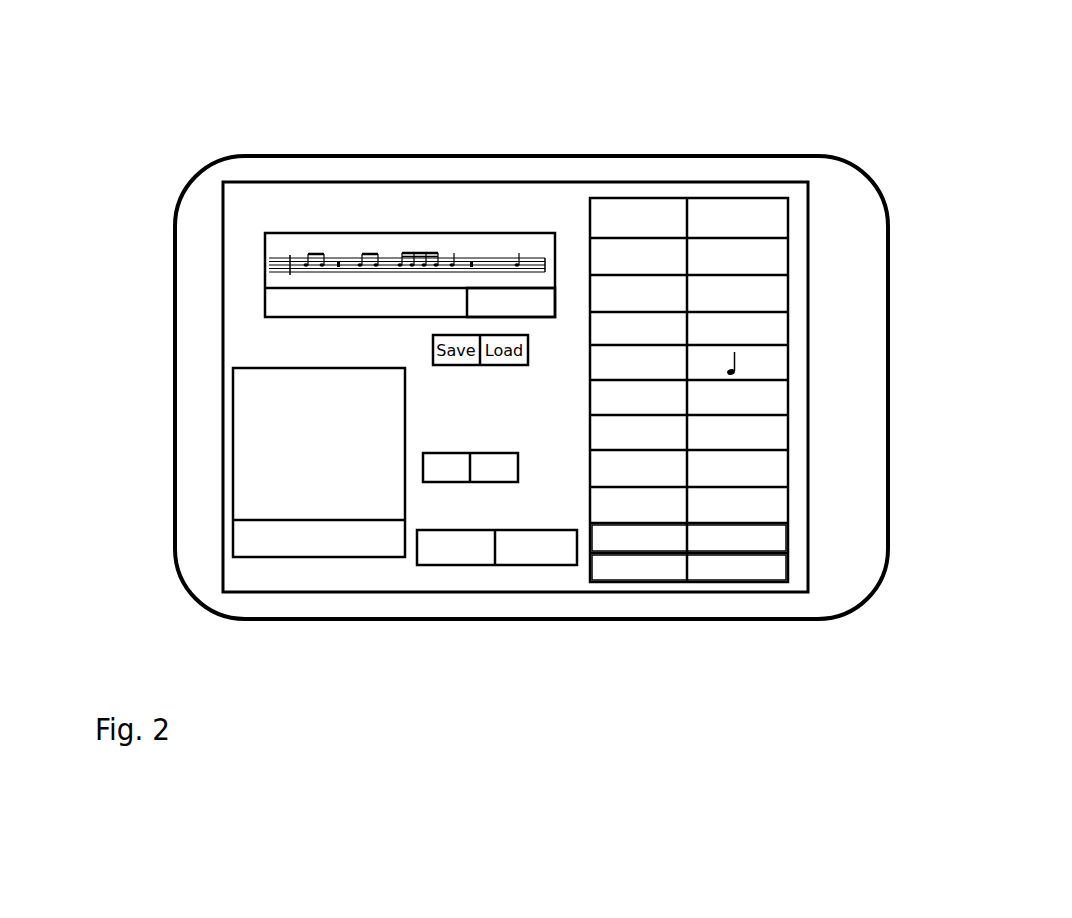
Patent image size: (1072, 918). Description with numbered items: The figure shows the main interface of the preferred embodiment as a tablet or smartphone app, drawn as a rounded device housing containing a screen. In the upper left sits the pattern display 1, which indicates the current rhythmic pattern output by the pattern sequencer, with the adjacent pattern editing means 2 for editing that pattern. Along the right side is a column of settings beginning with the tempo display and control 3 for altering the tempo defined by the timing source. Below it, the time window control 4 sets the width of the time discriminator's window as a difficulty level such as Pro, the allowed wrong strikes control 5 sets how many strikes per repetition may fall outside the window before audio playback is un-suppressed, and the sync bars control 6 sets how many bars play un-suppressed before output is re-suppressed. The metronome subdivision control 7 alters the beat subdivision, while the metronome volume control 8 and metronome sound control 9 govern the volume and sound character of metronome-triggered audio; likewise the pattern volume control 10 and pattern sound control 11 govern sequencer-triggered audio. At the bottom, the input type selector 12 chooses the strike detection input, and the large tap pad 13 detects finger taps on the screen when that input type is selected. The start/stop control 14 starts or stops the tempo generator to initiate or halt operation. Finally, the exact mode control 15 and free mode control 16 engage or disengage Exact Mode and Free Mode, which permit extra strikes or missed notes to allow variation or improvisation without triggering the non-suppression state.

The pattern display 1 is at (303, 235).
The pattern editing means 2 is at (502, 285).
The tempo display and control 3 is at (799, 423).
The time window control 4 is at (796, 258).
The allowed wrong strikes control 5 is at (796, 294).
The sync bars control 6 is at (796, 331).
The metronome subdivision control 7 is at (796, 360).
The metronome volume control 8 is at (796, 393).
The metronome sound control 9 is at (796, 432).
The pattern volume control 10 is at (796, 467).
The pattern sound control 11 is at (796, 498).
The input type selector 12 is at (535, 570).
The tap pad 13 is at (378, 497).
The start/stop control 14 is at (432, 432).
The exact mode control 15 is at (697, 540).
The free mode control 16 is at (695, 577).